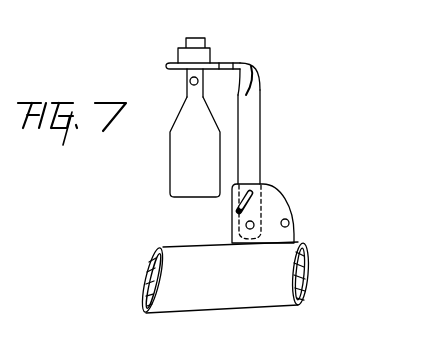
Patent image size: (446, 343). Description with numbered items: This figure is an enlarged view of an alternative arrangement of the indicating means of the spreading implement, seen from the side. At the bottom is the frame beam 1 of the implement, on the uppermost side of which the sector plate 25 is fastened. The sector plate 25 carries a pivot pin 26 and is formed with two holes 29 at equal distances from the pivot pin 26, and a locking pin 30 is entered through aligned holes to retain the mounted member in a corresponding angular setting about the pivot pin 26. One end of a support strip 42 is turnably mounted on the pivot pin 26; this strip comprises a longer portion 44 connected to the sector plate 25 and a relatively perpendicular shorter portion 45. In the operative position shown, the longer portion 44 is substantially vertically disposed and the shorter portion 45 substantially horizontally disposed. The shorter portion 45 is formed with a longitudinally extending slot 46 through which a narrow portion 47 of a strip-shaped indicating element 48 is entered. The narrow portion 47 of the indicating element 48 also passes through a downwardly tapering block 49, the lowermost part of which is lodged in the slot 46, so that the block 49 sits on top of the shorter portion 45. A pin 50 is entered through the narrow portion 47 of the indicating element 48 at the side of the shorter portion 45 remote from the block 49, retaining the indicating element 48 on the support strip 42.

The frame beam 1 is at (162, 247).
The sector plate 25 is at (290, 210).
The pivot pin 26 is at (250, 231).
The holes 29 is at (290, 223).
The locking pin 30 is at (237, 207).
The support strip 42 is at (253, 64).
The longer portion 44 is at (261, 141).
The shorter portion 45 is at (166, 66).
The slot 46 is at (215, 61).
The narrow portion 47 is at (189, 79).
The indicating element 48 is at (170, 183).
The block 49 is at (178, 52).
The pin 50 is at (191, 85).